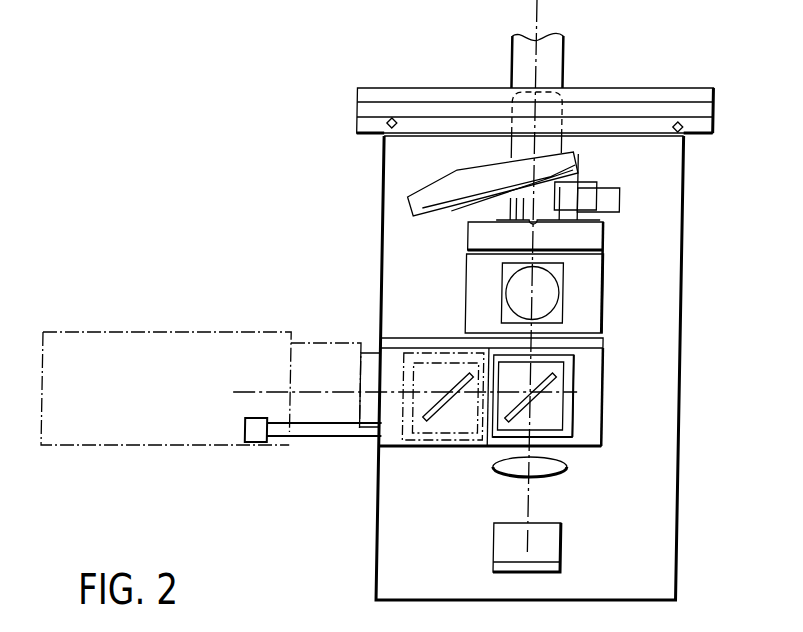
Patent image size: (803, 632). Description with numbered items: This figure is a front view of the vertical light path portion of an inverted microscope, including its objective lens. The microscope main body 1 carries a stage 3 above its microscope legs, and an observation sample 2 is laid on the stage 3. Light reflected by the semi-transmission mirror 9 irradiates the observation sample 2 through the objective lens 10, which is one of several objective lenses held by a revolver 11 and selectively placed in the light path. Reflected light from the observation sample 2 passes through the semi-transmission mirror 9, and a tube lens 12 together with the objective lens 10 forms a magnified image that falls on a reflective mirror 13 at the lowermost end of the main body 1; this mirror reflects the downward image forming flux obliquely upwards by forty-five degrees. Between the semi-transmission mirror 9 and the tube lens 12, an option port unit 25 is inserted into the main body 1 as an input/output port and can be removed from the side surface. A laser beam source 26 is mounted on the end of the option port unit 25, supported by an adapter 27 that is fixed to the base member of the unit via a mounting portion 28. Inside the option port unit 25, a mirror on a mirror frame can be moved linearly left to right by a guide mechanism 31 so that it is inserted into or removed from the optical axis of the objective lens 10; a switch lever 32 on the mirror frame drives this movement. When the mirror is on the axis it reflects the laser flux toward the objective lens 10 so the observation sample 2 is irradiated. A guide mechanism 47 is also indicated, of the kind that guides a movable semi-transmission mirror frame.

The microscope main body 1 is at (401, 530).
The observation sample 2 is at (566, 53).
The stage 3 is at (715, 97).
The semi-transmission mirror 9 is at (562, 312).
The objective lens 10 is at (565, 143).
The revolver 11 is at (426, 200).
The tube lens 12 is at (565, 477).
The reflective mirror 13 is at (556, 547).
The option port unit 25 is at (615, 362).
The laser beam source 26 is at (262, 332).
The adapter 27 is at (334, 348).
The mounting portion 28 is at (376, 352).
The guide mechanism 31 is at (560, 420).
The switch lever 32 is at (262, 430).
The guide mechanism 47 is at (498, 447).